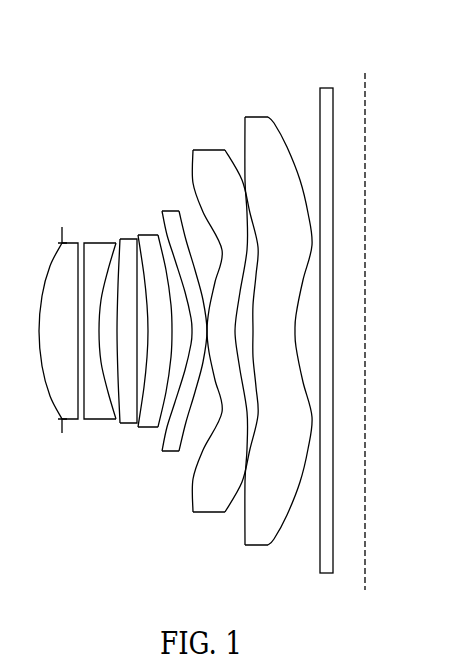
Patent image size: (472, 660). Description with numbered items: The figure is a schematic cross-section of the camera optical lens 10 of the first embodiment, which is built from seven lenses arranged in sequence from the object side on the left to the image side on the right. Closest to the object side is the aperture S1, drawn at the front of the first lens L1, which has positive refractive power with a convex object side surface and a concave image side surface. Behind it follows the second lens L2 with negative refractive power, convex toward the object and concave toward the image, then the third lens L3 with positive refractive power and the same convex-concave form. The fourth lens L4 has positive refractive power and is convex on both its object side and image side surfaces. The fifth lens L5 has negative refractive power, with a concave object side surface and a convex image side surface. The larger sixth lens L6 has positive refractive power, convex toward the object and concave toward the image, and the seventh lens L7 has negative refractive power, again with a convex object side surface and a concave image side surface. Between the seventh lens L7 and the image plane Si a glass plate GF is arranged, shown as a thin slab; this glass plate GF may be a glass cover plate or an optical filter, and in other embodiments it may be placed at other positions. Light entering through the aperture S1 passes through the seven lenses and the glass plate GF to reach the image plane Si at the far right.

The camera optical lens 10 is at (222, 50).
The aperture S1 is at (59, 319).
The first lens L1 is at (66, 322).
The second lens L2 is at (100, 322).
The third lens L3 is at (126, 322).
The fourth lens L4 is at (155, 319).
The fifth lens L5 is at (184, 319).
The sixth lens L6 is at (225, 315).
The seventh lens L7 is at (273, 319).
The glass plate GF is at (327, 320).
The image plane Si is at (368, 321).